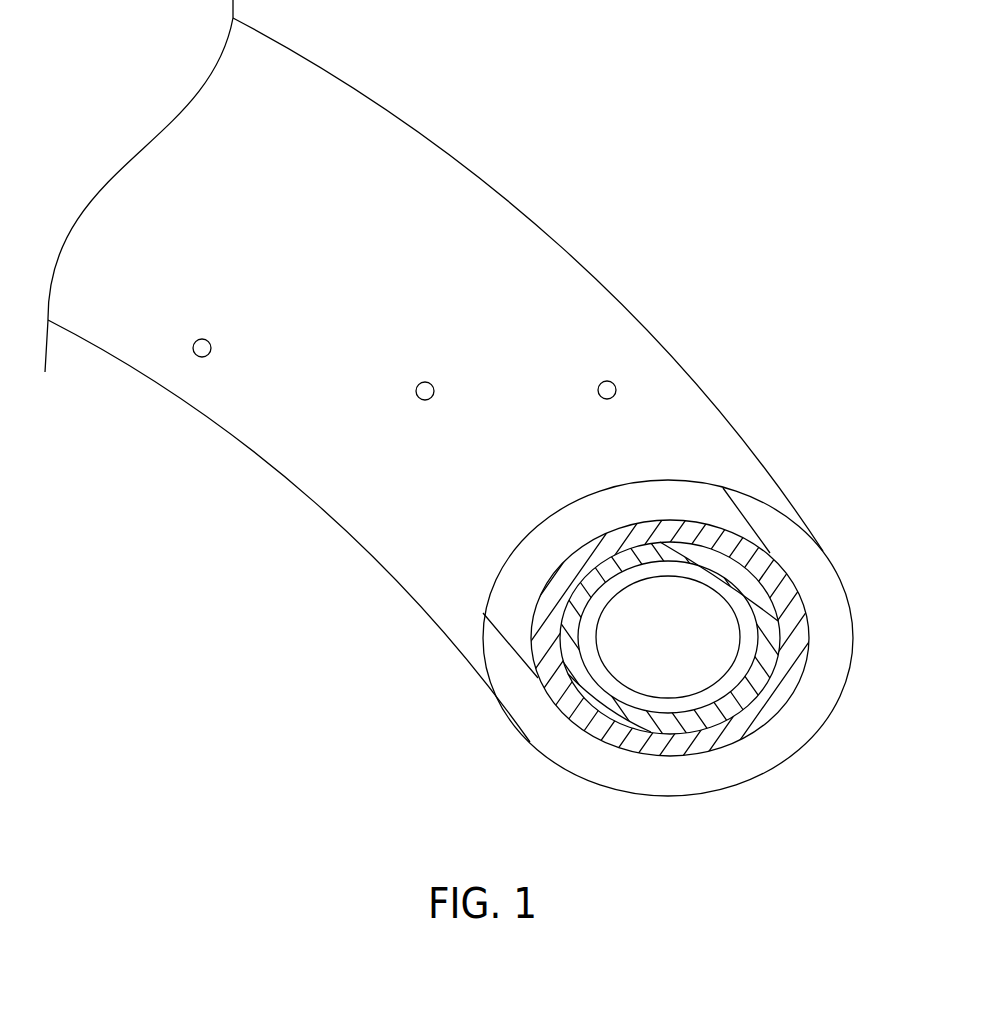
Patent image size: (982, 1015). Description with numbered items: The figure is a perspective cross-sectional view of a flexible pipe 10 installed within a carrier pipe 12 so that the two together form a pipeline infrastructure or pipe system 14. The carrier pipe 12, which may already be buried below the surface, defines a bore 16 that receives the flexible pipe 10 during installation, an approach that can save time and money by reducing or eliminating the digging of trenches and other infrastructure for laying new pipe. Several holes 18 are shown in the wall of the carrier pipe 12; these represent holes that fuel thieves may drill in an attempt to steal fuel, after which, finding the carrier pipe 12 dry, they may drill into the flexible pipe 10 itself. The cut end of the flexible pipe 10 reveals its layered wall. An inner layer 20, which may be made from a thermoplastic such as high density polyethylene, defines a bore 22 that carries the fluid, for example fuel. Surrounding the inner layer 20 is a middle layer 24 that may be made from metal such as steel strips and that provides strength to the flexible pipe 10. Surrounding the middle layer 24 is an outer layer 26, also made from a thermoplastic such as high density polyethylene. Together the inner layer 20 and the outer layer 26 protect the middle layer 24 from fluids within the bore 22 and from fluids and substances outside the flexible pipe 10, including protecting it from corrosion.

The flexible pipe 10 is at (463, 433).
The carrier pipe 12 is at (263, 483).
The pipe system 14 is at (843, 496).
The bore 16 is at (685, 773).
The holes 18 is at (201, 339).
The inner layer 20 is at (726, 691).
The bore 22 is at (681, 654).
The middle layer 24 is at (766, 660).
The outer layer 26 is at (652, 743).